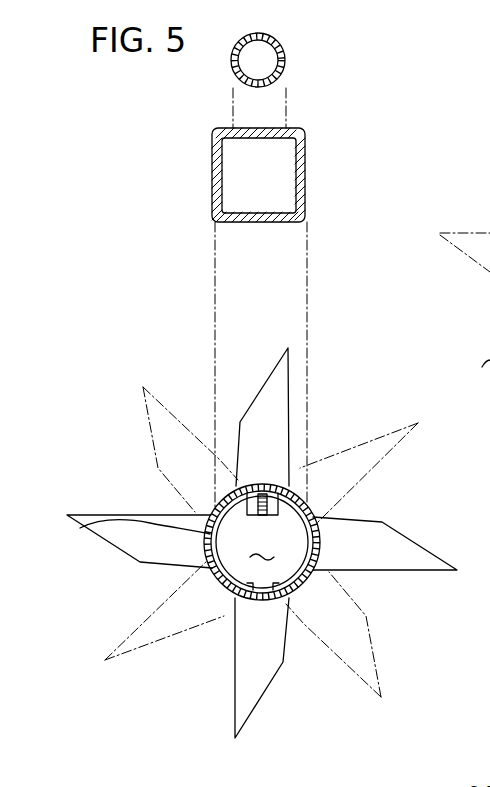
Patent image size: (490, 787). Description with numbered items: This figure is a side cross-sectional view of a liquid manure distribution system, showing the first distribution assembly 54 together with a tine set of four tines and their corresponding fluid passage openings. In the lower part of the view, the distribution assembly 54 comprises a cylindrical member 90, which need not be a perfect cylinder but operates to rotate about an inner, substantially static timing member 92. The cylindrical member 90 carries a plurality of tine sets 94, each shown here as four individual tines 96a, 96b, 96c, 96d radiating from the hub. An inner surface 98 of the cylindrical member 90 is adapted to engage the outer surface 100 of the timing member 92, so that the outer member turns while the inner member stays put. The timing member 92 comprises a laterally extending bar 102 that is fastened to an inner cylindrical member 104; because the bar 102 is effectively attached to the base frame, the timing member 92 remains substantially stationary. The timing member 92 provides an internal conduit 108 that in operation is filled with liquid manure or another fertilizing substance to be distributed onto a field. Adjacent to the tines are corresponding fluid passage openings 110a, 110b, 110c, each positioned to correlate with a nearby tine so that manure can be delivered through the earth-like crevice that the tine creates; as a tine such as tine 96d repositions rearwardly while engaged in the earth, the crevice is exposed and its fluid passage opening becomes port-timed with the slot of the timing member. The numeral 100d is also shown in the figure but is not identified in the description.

The first distribution assembly 54 is at (110, 410).
The cylindrical member 90 is at (123, 543).
The timing member 92 is at (200, 572).
The tine set 94 is at (255, 387).
The tine 96a is at (398, 552).
The tine 96b is at (273, 410).
The tine 96c is at (123, 542).
The tine 96d is at (250, 693).
The inner surface 98 is at (317, 540).
The outer surface 100 is at (207, 570).
The phantom fin position 100d is at (223, 593).
The laterally extending bar 102 is at (292, 480).
The inner cylindrical member 104 is at (303, 583).
The internal conduit 108 is at (262, 545).
The fluid passage opening 110a is at (296, 605).
The fluid passage opening 110b is at (298, 504).
The fluid passage opening 110c is at (223, 497).